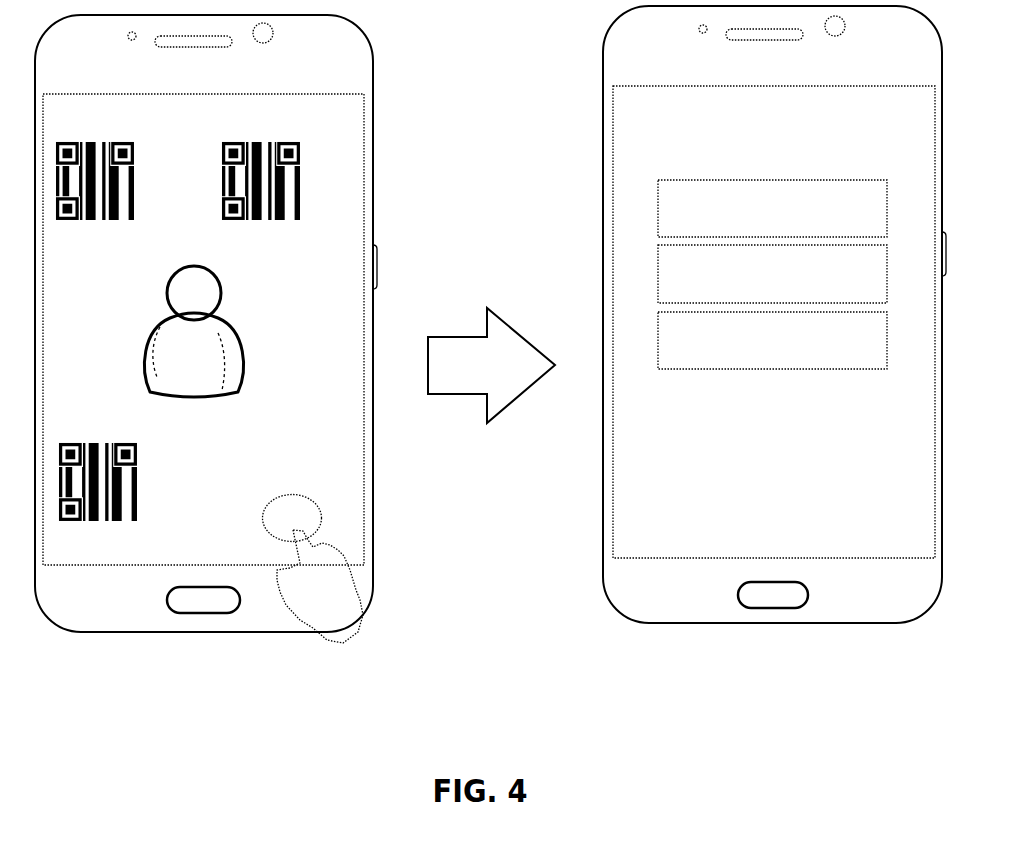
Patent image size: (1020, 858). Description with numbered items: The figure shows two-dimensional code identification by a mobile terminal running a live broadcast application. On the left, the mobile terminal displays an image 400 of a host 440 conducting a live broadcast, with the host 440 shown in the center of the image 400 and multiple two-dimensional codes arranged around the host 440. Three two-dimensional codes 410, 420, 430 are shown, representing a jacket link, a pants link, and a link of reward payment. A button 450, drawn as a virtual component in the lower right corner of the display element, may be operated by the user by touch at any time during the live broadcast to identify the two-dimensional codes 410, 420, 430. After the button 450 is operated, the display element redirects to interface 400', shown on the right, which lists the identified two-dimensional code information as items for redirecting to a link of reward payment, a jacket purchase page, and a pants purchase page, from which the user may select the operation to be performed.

The image 400 is at (206, 323).
The two-dimensional code 410 is at (140, 182).
The two-dimensional code 420 is at (304, 182).
The two-dimensional code 430 is at (147, 450).
The host 440 is at (233, 327).
The button 450 is at (290, 497).
The interface 400' is at (774, 314).